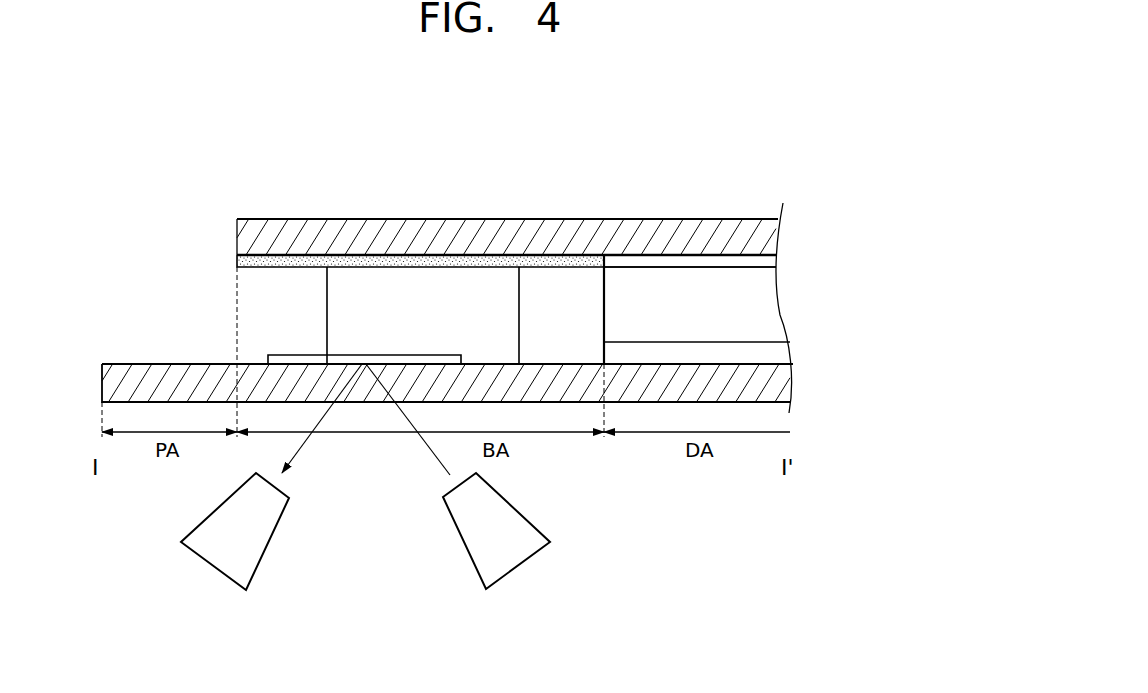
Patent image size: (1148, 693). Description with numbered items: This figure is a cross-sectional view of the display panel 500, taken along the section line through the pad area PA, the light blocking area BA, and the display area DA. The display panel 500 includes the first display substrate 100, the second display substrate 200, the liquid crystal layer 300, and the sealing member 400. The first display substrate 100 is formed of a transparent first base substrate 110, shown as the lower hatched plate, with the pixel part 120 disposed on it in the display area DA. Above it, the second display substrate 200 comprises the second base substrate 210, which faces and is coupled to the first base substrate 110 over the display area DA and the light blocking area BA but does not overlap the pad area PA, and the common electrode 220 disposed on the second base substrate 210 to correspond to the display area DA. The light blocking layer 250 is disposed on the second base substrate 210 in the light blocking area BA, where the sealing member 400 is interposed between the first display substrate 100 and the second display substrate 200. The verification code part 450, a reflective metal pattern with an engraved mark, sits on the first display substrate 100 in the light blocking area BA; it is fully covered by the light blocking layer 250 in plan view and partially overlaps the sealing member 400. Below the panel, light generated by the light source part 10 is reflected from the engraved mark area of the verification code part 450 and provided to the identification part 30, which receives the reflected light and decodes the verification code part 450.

The display panel 500 is at (739, 145).
The second display substrate 200 is at (866, 223).
The second base substrate 210 is at (767, 231).
The common electrode 220 is at (767, 262).
The light blocking layer 250 is at (557, 262).
The liquid crystal layer 300 is at (771, 304).
The sealing member 400 is at (425, 287).
The verification code part 450 is at (287, 362).
The first display substrate 100 is at (866, 343).
The pixel part 120 is at (781, 352).
The first base substrate 110 is at (781, 387).
The identification part 30 is at (213, 570).
The light source part 10 is at (518, 568).